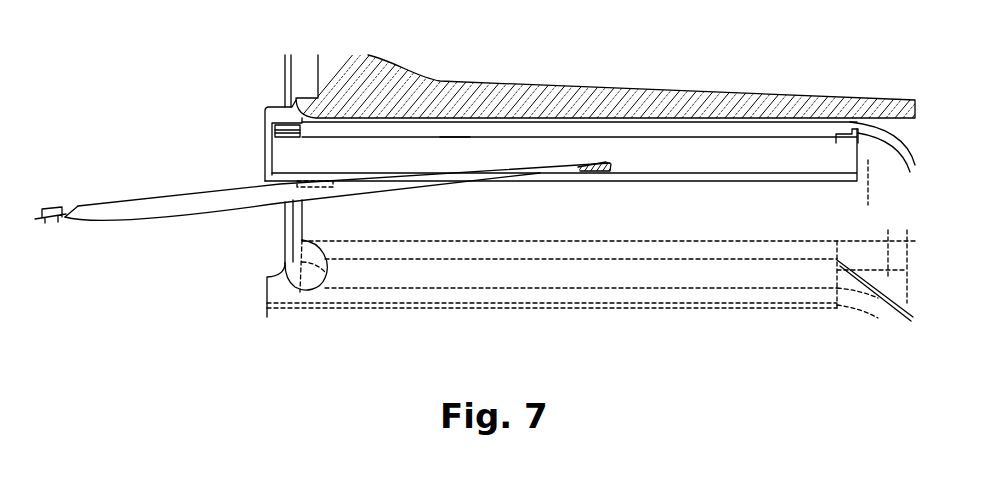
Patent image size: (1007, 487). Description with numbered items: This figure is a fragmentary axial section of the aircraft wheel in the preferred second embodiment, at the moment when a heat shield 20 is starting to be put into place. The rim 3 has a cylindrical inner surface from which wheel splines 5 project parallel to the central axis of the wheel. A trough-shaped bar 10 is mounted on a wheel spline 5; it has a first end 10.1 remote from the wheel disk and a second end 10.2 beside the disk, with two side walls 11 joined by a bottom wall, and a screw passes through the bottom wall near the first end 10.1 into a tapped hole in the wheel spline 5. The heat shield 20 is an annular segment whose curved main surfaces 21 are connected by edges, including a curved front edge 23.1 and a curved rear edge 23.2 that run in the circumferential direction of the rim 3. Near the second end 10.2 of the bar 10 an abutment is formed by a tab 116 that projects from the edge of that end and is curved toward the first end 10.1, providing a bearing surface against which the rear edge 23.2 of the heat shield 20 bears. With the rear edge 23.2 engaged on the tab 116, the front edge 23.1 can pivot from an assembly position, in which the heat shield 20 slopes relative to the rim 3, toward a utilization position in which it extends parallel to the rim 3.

The rim 3 is at (550, 100).
The wheel spline 5 is at (453, 130).
The bar 10 is at (617, 110).
The first end of the bar 10.1 is at (265, 150).
The second end of the bar 10.2 is at (888, 165).
The side wall 11 is at (797, 157).
The tab 116 is at (840, 146).
The heat shield 20 is at (352, 202).
The main surface 21 is at (181, 197).
The front edge 23.1 is at (45, 219).
The rear edge 23.2 is at (622, 170).